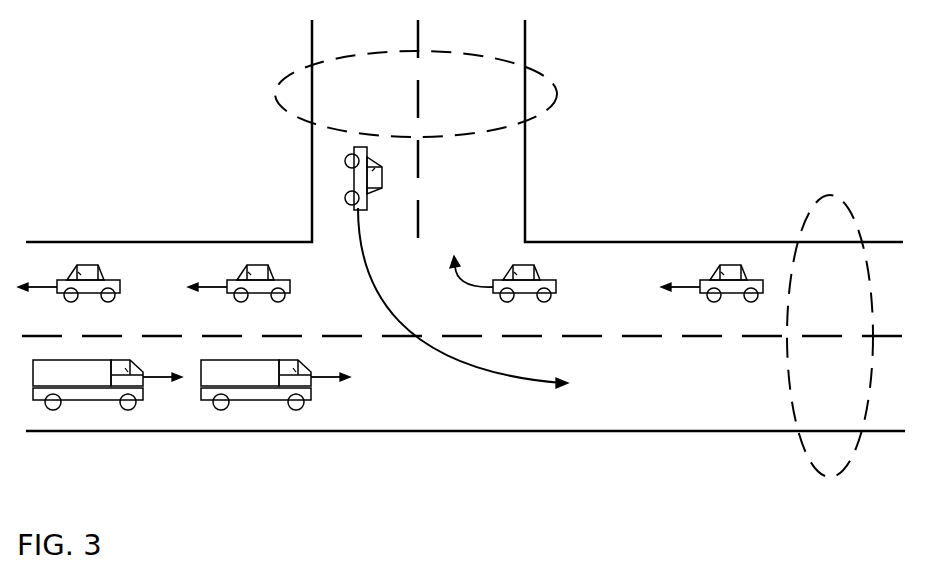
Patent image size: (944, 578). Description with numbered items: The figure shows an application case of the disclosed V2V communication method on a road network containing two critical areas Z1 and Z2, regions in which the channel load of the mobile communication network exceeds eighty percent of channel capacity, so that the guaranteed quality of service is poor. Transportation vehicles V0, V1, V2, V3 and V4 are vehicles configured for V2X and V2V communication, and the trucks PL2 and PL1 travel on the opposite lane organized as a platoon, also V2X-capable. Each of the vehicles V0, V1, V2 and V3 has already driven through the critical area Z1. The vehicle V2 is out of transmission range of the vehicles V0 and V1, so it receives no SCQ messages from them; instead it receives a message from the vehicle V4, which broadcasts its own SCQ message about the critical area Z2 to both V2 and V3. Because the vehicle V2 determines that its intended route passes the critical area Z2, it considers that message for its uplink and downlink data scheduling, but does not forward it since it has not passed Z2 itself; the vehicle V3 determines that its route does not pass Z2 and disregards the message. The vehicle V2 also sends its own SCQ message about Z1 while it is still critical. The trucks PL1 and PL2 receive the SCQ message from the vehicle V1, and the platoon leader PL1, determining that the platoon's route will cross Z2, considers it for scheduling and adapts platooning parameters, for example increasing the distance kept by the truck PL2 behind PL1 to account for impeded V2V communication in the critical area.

The transportation vehicle V0 is at (94, 265).
The transportation vehicle V1 is at (263, 265).
The transportation vehicle V2 is at (529, 265).
The transportation vehicle V3 is at (735, 265).
The transportation vehicle V4 is at (350, 175).
The critical area Z1 is at (834, 193).
The critical area Z2 is at (557, 98).
The platoon leader truck PL1 is at (263, 402).
The platoon truck PL2 is at (78, 402).